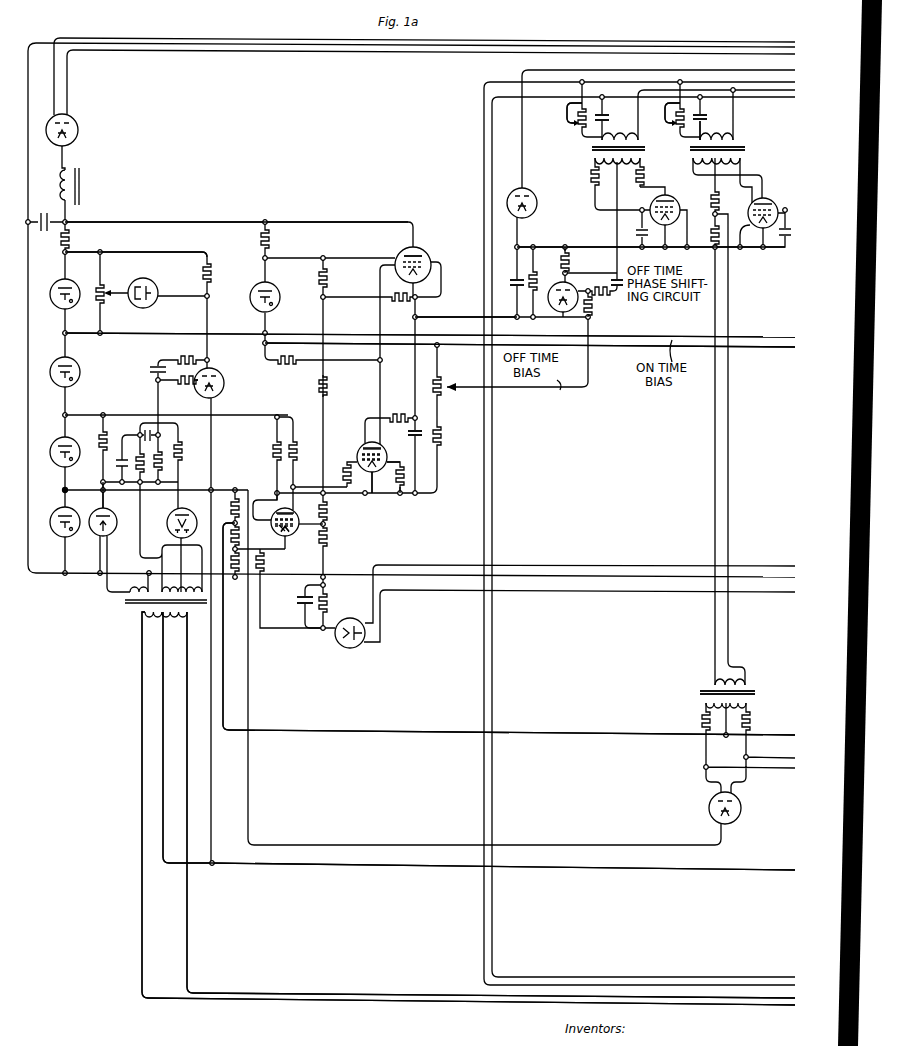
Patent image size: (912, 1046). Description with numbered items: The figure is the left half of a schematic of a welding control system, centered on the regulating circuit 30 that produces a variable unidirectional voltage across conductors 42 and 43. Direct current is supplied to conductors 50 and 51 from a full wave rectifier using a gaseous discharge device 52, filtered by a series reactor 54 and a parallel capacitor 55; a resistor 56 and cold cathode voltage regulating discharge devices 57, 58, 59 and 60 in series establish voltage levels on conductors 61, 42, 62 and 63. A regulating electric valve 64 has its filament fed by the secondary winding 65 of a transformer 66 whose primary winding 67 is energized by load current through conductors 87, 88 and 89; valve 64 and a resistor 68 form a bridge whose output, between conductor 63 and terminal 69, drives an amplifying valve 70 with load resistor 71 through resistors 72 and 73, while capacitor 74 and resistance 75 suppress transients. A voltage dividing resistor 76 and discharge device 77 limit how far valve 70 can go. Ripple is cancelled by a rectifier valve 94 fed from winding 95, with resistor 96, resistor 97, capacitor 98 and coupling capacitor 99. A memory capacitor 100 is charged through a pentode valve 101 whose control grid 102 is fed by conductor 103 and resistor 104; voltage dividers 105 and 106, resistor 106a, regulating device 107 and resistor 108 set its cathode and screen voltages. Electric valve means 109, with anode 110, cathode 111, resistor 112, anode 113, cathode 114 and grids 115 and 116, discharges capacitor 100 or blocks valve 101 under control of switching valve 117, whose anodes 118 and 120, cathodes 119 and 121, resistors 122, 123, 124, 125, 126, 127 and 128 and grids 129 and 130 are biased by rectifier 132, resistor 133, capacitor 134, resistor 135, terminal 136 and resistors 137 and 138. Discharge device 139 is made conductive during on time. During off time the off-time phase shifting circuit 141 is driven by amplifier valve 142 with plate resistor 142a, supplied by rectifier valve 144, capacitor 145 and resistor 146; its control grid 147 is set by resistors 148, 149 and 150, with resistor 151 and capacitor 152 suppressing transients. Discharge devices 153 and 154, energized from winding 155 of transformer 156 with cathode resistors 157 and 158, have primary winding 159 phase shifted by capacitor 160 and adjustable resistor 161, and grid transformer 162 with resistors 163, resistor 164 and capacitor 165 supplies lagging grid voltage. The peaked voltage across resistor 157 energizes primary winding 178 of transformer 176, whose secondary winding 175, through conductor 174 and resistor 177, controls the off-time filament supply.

The regulating circuit 30 is at (238, 207).
The output conductor 42 is at (134, 333).
The output conductor 43 is at (613, 347).
The conductor 50 is at (137, 222).
The conductor 51 is at (52, 575).
The gaseous discharge device 52 is at (78, 131).
The series reactor 54 is at (68, 172).
The parallel capacitor 55 is at (44, 211).
The resistor 56 is at (70, 236).
The voltage regulating discharge device 57 is at (53, 285).
The voltage regulating discharge device 58 is at (55, 360).
The voltage regulating discharge device 59 is at (55, 441).
The voltage regulating discharge device 60 is at (54, 516).
The conductor 61 is at (150, 252).
The conductor 62 is at (131, 415).
The conductor 63 is at (88, 490).
The regulating electric valve 64 is at (113, 514).
The secondary winding 65 is at (128, 592).
The transformer 66 is at (158, 607).
The primary winding 67 is at (186, 612).
The resistor 68 is at (98, 440).
The common terminal 69 is at (100, 494).
The amplifying valve 70 is at (224, 376).
The load resistor 71 is at (212, 270).
The current limiting resistor 72 is at (180, 384).
The resistor 73 is at (160, 466).
The capacitor 74 is at (150, 368).
The resistance 75 is at (178, 358).
The voltage dividing resistor 76 is at (105, 283).
The discharge device 77 is at (150, 279).
The conductor 87 is at (260, 992).
The conductor 88 is at (305, 866).
The conductor 89 is at (320, 1003).
The electric valve 94 is at (170, 515).
The midtapped transformer winding 95 is at (190, 586).
The resistor 96 is at (183, 449).
The resistor 97 is at (144, 466).
The capacitor 98 is at (119, 458).
The coupling capacitor 99 is at (152, 434).
The capacitor 100 is at (422, 426).
The electric valve 101 is at (430, 251).
The control grid 102 is at (404, 256).
The conductor 103 is at (378, 318).
The resistor 104 is at (284, 363).
The voltage dividing resistor 105 is at (328, 278).
The voltage dividing resistor 106 is at (328, 392).
The resistor 106a is at (396, 302).
The voltage regulating discharge device 107 is at (251, 292).
The resistor 108 is at (270, 241).
The electric valve means 109 is at (365, 444).
The anode 110 is at (363, 449).
The cathode 111 is at (370, 482).
The resistor 112 is at (398, 413).
The anode 113 is at (384, 452).
The cathode 114 is at (386, 480).
The control grid 115 is at (358, 456).
The control grid 116 is at (403, 465).
The switching electric valve means 117 is at (276, 528).
The anode 118 is at (276, 500).
The cathode 119 is at (283, 537).
The anode 120 is at (292, 513).
The cathode 121 is at (293, 530).
The resistor 122 is at (233, 497).
The resistor 123 is at (240, 547).
The resistor 124 is at (245, 578).
The resistor 125 is at (273, 446).
The resistor 126 is at (296, 443).
The current limiting resistor 127 is at (347, 471).
The current limiting resistor 128 is at (402, 486).
The control grid 129 is at (275, 517).
The control grid 130 is at (290, 532).
The electric discharge device 132 is at (350, 648).
The resistor 133 is at (328, 603).
The capacitor 134 is at (300, 600).
The current limiting resistor 135 is at (263, 578).
The terminal 136 is at (327, 524).
The voltage dividing resistor 137 is at (328, 509).
The voltage dividing resistor 138 is at (328, 535).
The electric discharge device 139 is at (708, 805).
The off-time phase shifting circuit 141 is at (651, 257).
The amplifier valve 142 is at (570, 265).
The plate resistor 142a is at (567, 248).
The rectifier valve 144 is at (530, 190).
The capacitor 145 is at (512, 283).
The resistor 146 is at (537, 268).
The control grid 147 is at (568, 311).
The voltage dividing resistor 148 is at (441, 434).
The voltage dividing resistor 149 is at (443, 380).
The current limiting resistor 150 is at (592, 308).
The resistor 151 is at (601, 293).
The capacitor 152 is at (619, 277).
The electric discharge device 153 is at (679, 200).
The electric discharge device 154 is at (771, 197).
The midtapped secondary winding 155 is at (741, 160).
The transformer 156 is at (727, 141).
The resistor 157 is at (710, 235).
The resistor 158 is at (720, 200).
The primary winding 159 is at (702, 130).
The capacitor 160 is at (703, 115).
The adjustable resistor 161 is at (677, 127).
The grid transformer 162 is at (603, 143).
The current limiting resistor 163 is at (590, 170).
The resistor 164 is at (578, 129).
The capacitor 165 is at (604, 115).
The conductor 174 is at (574, 733).
The mid-tapped secondary winding 175 is at (702, 703).
The transformer 176 is at (757, 694).
The current limiting resistor 177 is at (700, 722).
The primary winding 178 is at (712, 683).